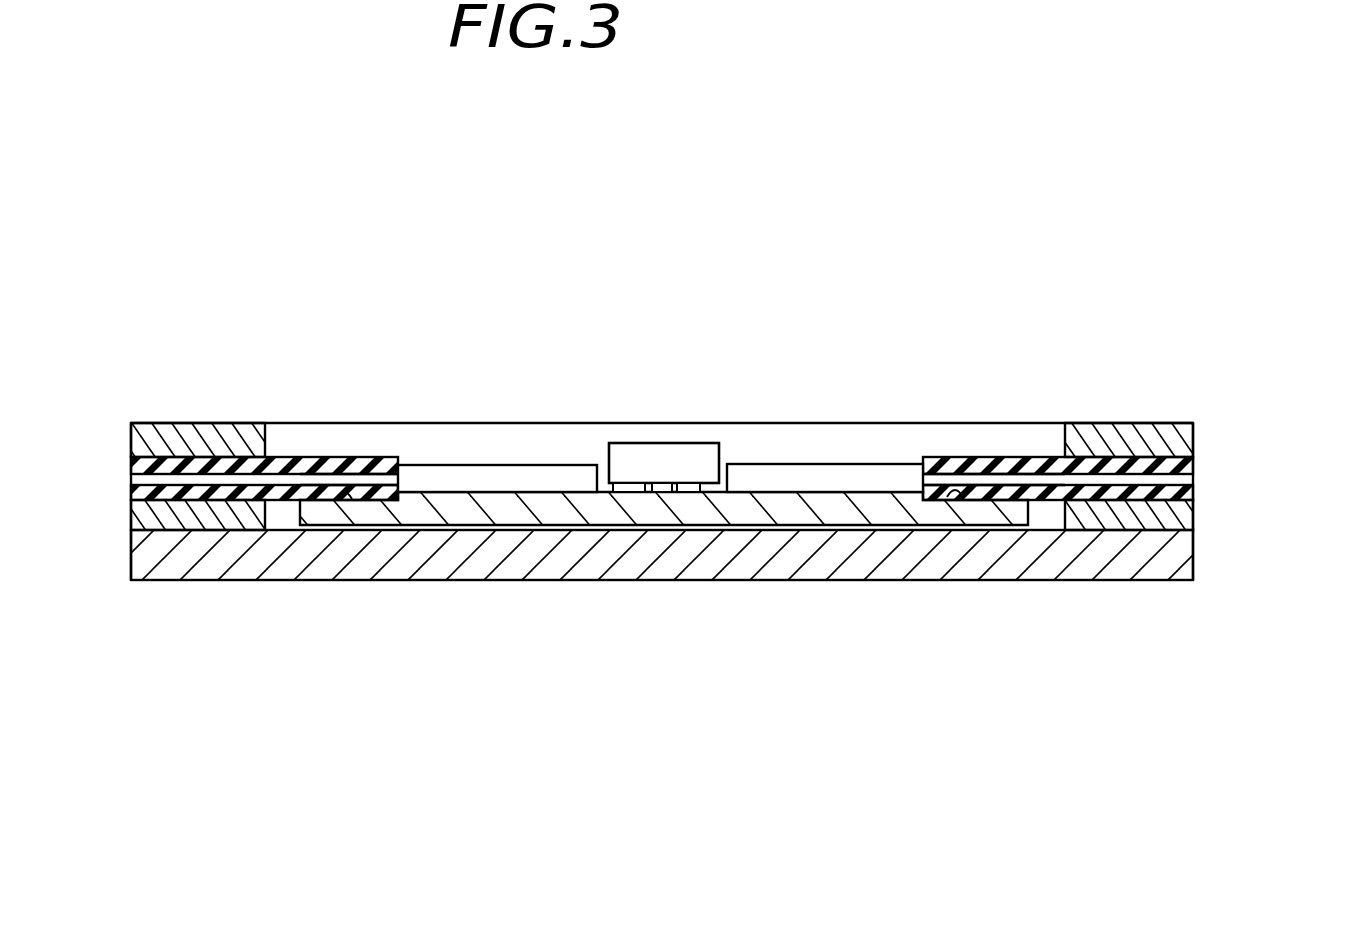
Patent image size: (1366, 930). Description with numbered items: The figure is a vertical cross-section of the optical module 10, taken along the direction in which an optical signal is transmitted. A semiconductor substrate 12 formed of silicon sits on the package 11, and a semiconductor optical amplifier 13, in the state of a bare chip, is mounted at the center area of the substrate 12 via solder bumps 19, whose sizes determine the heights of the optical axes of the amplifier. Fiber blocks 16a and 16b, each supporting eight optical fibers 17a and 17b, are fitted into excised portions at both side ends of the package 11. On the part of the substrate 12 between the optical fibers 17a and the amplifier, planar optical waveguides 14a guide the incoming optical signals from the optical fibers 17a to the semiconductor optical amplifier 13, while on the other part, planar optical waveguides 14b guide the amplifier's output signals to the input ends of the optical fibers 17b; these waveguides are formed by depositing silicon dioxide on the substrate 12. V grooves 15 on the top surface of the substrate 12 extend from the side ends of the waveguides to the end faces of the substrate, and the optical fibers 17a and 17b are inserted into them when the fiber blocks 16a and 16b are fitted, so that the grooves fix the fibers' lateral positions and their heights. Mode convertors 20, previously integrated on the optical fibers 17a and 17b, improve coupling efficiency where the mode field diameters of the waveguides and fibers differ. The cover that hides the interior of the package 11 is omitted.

The optical module 10 is at (851, 258).
The package 11 is at (650, 580).
The semiconductor substrate 12 is at (487, 513).
The semiconductor optical amplifier 13 is at (655, 452).
The planar optical waveguide 14a is at (777, 470).
The planar optical waveguide 14b is at (463, 470).
The V groove 15 is at (347, 497).
The fiber block 16a is at (1137, 436).
The fiber block 16b is at (181, 432).
The optical fiber 17a is at (1047, 460).
The optical fiber 17b is at (357, 457).
The solder bump 19 is at (643, 488).
The mode convertor 20 is at (308, 475).